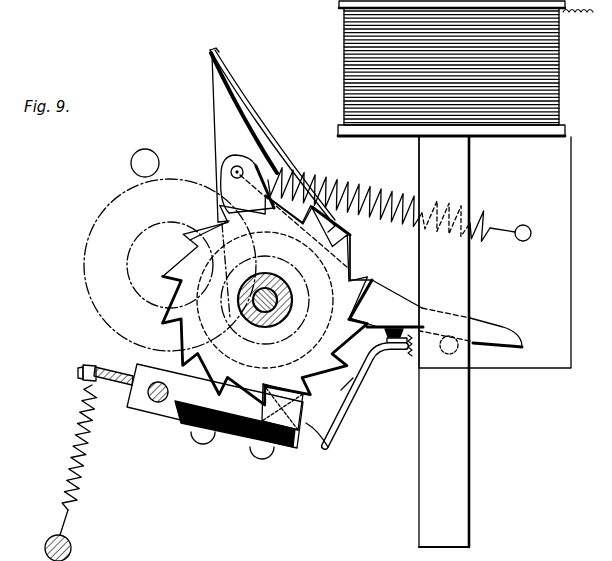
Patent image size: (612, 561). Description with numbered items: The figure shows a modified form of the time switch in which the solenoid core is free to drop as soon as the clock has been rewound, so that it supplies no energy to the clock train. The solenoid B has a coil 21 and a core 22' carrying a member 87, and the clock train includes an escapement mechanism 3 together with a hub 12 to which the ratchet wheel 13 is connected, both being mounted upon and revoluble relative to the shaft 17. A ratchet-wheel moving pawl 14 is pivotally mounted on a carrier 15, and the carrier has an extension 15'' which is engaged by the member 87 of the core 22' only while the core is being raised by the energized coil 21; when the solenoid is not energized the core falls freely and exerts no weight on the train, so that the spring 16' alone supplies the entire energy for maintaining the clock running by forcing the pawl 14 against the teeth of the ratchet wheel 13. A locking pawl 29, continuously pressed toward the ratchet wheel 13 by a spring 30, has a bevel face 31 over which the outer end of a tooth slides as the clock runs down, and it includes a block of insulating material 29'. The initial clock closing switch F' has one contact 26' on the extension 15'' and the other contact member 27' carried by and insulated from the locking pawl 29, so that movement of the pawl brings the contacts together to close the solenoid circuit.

The escapement mechanism 3 is at (131, 158).
The hub 12 is at (294, 300).
The ratchet wheel 13 is at (348, 263).
The ratchet-wheel moving pawl 14 is at (331, 217).
The carrier 15 is at (294, 187).
The carrier extension 15'' is at (449, 313).
The spring 16' is at (399, 195).
The shaft 17 is at (257, 323).
The coil 21 is at (551, 62).
The solenoid B is at (558, 85).
The core 22' is at (468, 342).
The contact 26' is at (335, 393).
The contact member 27' is at (365, 396).
The locking pawl 29 is at (215, 428).
The block of insulating material 29' is at (129, 411).
The spring 30 is at (96, 450).
The bevel face 31 is at (331, 443).
The member of the core 87 is at (457, 350).
The clock switch F' is at (398, 361).